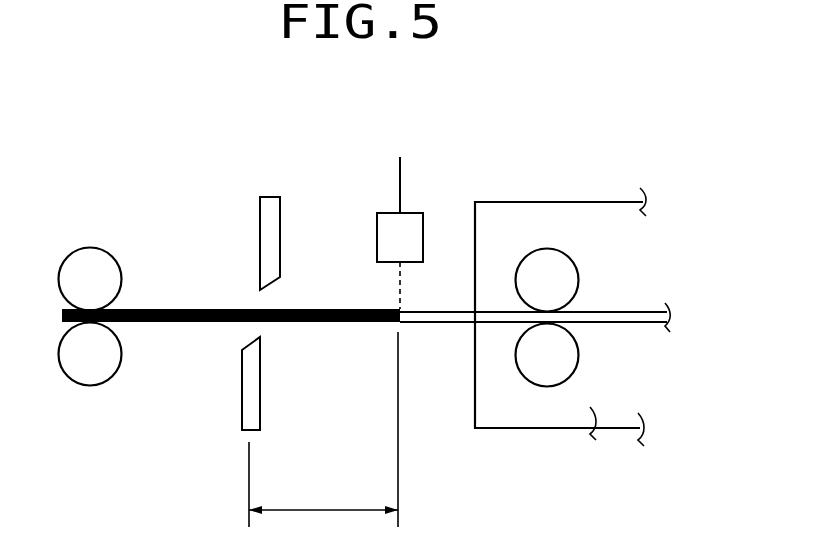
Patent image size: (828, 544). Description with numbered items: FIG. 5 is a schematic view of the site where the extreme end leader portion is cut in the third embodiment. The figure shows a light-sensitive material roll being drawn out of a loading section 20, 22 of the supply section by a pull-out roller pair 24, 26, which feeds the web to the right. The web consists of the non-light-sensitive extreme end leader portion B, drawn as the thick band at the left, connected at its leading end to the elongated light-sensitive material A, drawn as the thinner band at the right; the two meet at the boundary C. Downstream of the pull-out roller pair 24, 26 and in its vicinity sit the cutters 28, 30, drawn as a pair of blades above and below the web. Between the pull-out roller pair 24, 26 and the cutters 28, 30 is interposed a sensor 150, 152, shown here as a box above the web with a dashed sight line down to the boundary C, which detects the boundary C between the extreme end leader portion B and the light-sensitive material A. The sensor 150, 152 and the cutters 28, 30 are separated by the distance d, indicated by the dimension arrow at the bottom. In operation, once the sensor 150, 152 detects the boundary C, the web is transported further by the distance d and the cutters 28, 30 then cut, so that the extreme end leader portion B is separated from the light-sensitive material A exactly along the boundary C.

The loading section 20 is at (577, 337).
The loading section 22 is at (596, 428).
The pull-out roller pair 24 is at (620, 305).
The pull-out roller pair 26 is at (545, 275).
The cutter 28 is at (250, 265).
The cutter 30 is at (268, 213).
The sensor 150 is at (473, 181).
The sensor 152 is at (395, 228).
The light-sensitive material A is at (443, 323).
The extreme end leader portion B is at (183, 308).
The boundary C is at (399, 308).
The distance d is at (323, 429).